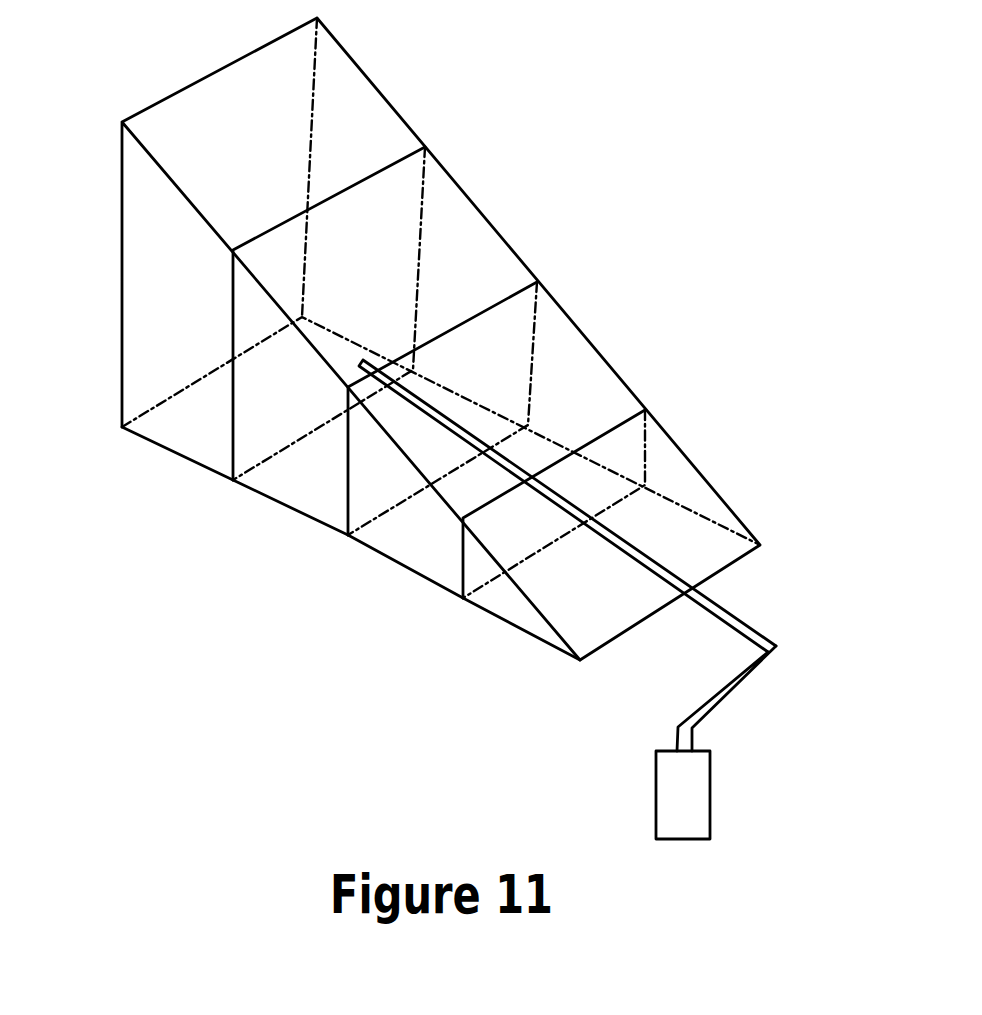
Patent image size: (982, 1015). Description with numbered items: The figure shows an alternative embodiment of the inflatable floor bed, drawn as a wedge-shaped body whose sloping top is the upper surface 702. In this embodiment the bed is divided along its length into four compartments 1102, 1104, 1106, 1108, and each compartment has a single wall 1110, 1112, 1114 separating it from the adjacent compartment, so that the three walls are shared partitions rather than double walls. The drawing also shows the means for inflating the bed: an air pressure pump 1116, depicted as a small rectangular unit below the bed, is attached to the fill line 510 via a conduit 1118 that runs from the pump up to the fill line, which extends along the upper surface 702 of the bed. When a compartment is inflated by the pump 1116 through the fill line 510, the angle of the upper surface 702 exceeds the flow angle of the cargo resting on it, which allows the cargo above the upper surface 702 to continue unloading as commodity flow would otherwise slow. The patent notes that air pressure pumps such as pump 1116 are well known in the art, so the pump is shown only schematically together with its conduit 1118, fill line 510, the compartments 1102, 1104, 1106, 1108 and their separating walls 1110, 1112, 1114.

The upper surface 702 is at (467, 193).
The compartment 1102 is at (527, 618).
The compartment 1104 is at (413, 538).
The compartment 1106 is at (320, 492).
The compartment 1108 is at (192, 432).
The wall 1110 is at (460, 572).
The wall 1112 is at (345, 518).
The wall 1114 is at (228, 453).
The fill line 510 is at (730, 605).
The conduit 1118 is at (745, 682).
The air pressure pump 1116 is at (695, 775).